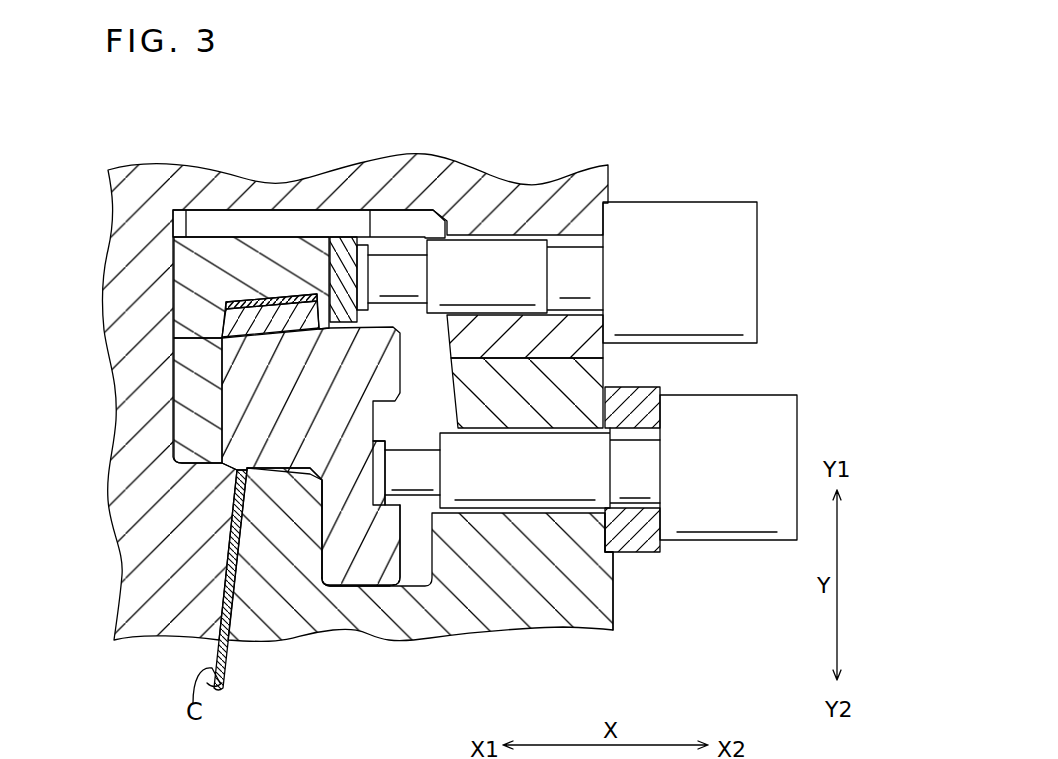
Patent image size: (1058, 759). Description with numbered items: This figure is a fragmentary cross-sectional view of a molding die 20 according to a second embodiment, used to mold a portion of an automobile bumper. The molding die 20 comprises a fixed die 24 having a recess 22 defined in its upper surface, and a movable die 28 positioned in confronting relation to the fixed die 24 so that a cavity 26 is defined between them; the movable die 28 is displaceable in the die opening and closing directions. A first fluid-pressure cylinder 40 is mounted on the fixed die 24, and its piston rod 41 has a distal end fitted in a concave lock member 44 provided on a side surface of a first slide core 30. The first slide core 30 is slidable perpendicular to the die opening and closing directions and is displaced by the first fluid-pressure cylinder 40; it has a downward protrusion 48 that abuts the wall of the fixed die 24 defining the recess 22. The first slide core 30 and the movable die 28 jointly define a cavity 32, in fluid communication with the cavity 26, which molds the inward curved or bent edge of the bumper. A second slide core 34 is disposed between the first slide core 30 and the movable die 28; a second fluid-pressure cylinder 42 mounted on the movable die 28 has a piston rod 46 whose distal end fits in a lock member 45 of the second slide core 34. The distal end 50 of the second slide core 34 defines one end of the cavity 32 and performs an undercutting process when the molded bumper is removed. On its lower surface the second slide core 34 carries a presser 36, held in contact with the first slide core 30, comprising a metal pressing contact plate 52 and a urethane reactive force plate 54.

The molding die 20 is at (687, 118).
The recess 22 is at (447, 570).
The fixed die 24 is at (590, 615).
The cavity 26 is at (240, 603).
The movable die 28 is at (123, 640).
The first slide core 30 is at (380, 367).
The cavity 32 is at (240, 500).
The second slide core 34 is at (242, 257).
The presser 36 is at (161, 327).
The first fluid-pressure cylinder 40 is at (752, 405).
The piston rod 41 is at (418, 460).
The second fluid-pressure cylinder 42 is at (742, 271).
The concave lock member 44 is at (386, 560).
The lock member 45 is at (347, 243).
The piston rod 46 is at (402, 270).
The downward protrusion 48 is at (363, 567).
The distal end 50 is at (197, 456).
The pressing contact plate 52 is at (247, 306).
The reactive force plate 54 is at (258, 297).